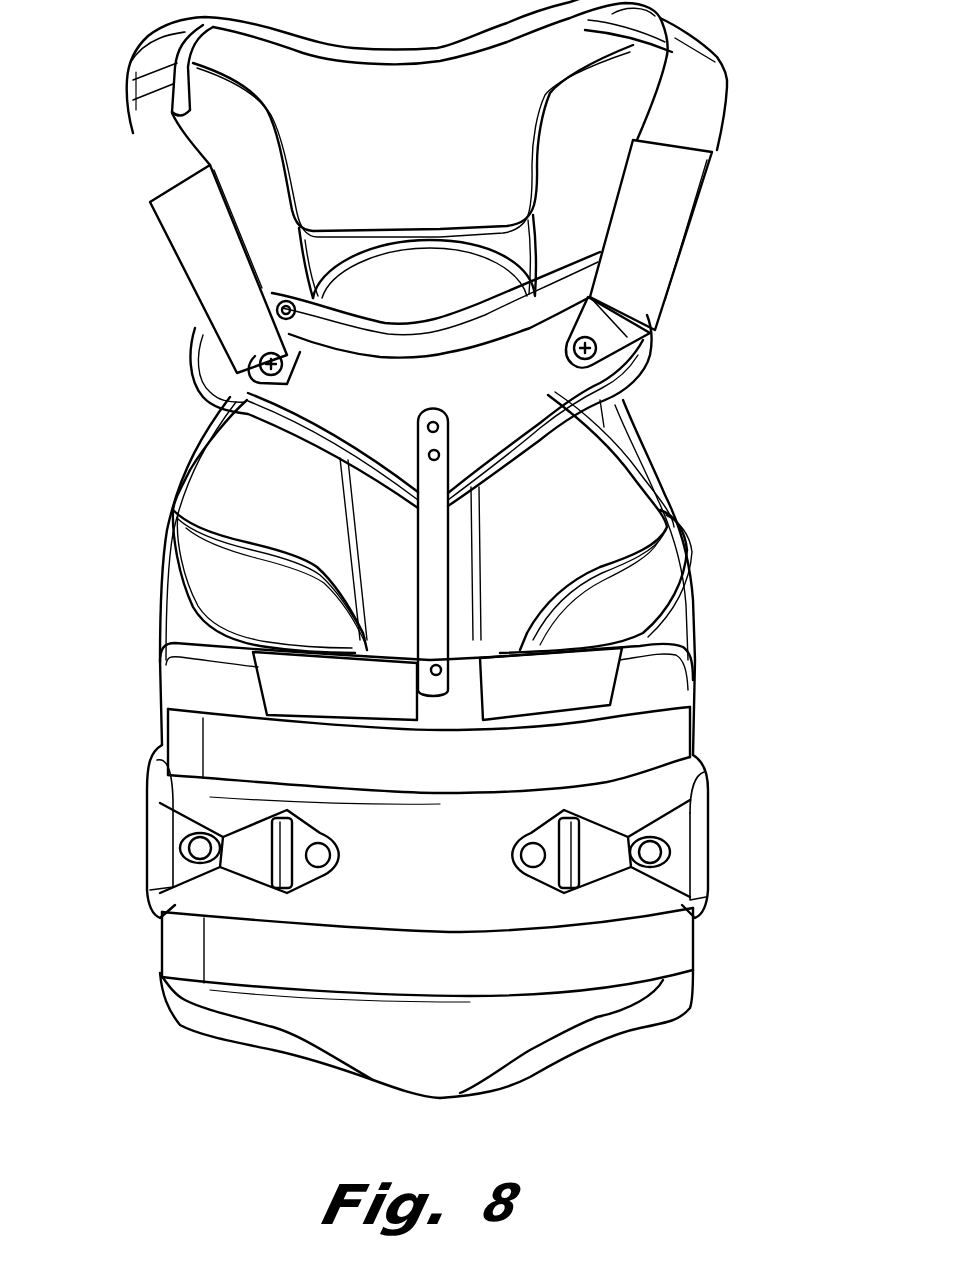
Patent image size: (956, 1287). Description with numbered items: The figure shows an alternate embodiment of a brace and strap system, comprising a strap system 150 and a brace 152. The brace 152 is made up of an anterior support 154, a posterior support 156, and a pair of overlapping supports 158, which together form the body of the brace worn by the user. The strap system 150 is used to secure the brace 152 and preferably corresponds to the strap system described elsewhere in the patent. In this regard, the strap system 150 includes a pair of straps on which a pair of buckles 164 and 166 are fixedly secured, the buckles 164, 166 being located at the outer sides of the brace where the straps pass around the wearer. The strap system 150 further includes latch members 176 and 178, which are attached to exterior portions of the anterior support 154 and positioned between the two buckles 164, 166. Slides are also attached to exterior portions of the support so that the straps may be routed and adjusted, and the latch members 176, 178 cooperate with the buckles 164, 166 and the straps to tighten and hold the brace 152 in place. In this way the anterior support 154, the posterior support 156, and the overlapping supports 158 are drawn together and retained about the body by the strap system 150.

The strap system 150 is at (732, 857).
The brace 152 is at (158, 462).
The anterior support 154 is at (438, 1070).
The posterior support 156 is at (647, 450).
The overlapping supports 158 is at (220, 573).
The buckle 164 is at (170, 822).
The buckle 166 is at (680, 828).
The latch member 176 is at (320, 827).
The latch member 178 is at (543, 827).